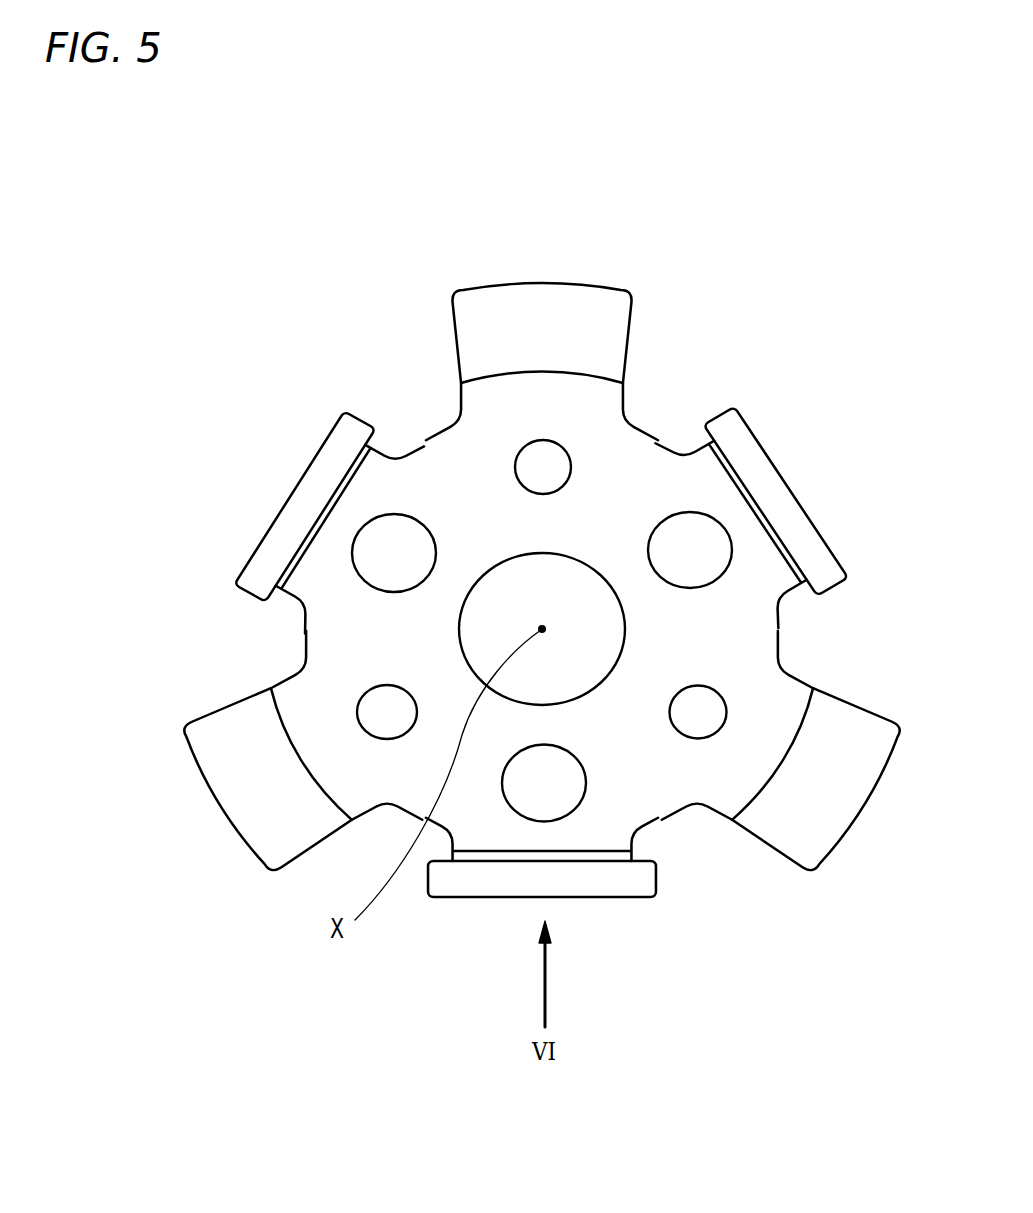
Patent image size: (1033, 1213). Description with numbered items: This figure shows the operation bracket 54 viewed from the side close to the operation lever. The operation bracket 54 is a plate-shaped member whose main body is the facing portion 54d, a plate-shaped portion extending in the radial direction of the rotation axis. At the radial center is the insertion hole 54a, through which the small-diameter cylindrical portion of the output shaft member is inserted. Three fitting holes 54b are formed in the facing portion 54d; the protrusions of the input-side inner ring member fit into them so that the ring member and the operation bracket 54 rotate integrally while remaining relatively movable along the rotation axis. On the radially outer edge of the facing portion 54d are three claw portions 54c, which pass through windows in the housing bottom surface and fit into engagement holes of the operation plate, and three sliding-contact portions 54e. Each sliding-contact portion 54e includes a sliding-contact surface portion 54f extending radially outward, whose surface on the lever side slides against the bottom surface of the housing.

The operation bracket 54 is at (727, 196).
The insertion hole 54a is at (625, 613).
The fitting hole 54b is at (515, 466).
The claw portion 54c is at (808, 507).
The facing portion 54d is at (742, 648).
The sliding-contact portion 54e is at (554, 312).
The sliding-contact surface portion 54f is at (478, 307).